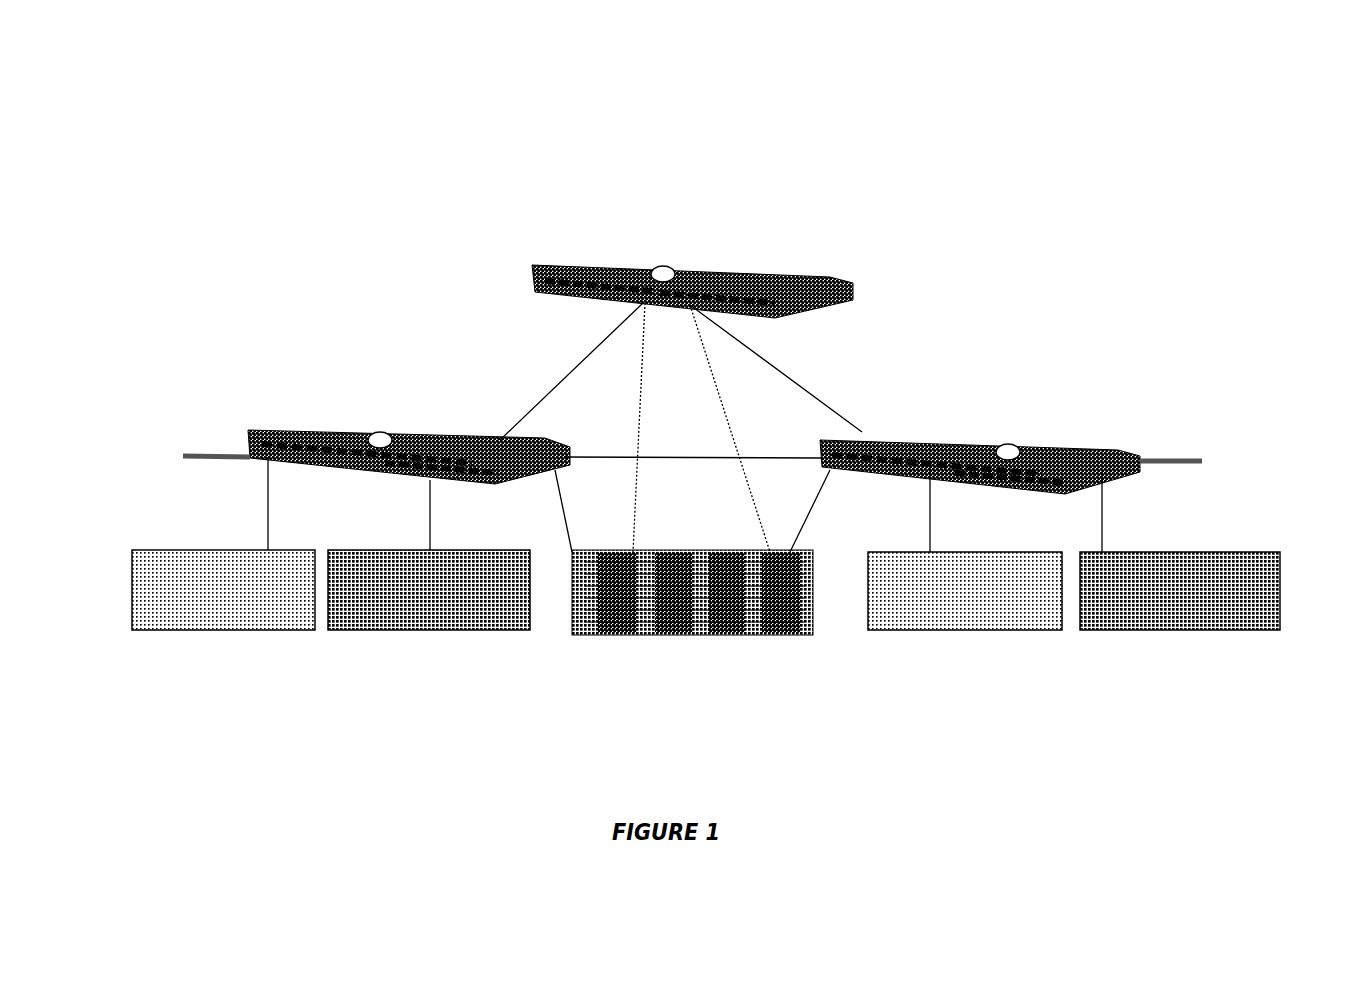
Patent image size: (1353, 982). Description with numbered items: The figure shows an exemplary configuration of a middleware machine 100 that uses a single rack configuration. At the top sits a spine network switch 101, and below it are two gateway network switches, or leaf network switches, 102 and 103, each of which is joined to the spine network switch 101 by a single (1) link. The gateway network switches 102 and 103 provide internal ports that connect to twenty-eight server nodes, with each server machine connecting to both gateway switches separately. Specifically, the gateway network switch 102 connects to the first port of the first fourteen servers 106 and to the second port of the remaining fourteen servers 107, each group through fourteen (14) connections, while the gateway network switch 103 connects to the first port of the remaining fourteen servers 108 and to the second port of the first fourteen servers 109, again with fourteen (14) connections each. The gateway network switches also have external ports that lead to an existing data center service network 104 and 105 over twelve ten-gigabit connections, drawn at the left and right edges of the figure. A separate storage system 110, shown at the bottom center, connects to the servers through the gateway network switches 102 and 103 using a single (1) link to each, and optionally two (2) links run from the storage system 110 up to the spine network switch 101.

The middleware machine 100 is at (163, 107).
The spine network switch 101 is at (752, 262).
The gateway network switch 102 is at (466, 440).
The gateway network switch 103 is at (895, 440).
The data center service network 104 is at (165, 442).
The data center service network 105 is at (1235, 440).
The port 1 of servers 1-14 106 is at (197, 632).
The port 2 of servers 15-28 107 is at (447, 632).
The port 1 of servers 15-28 108 is at (962, 630).
The port 2 of servers 1-14 109 is at (1197, 630).
The storage system 110 is at (713, 635).
The single link 1 is at (681, 427).
The two links 2 is at (693, 439).
The fourteen connections 14 is at (698, 504).